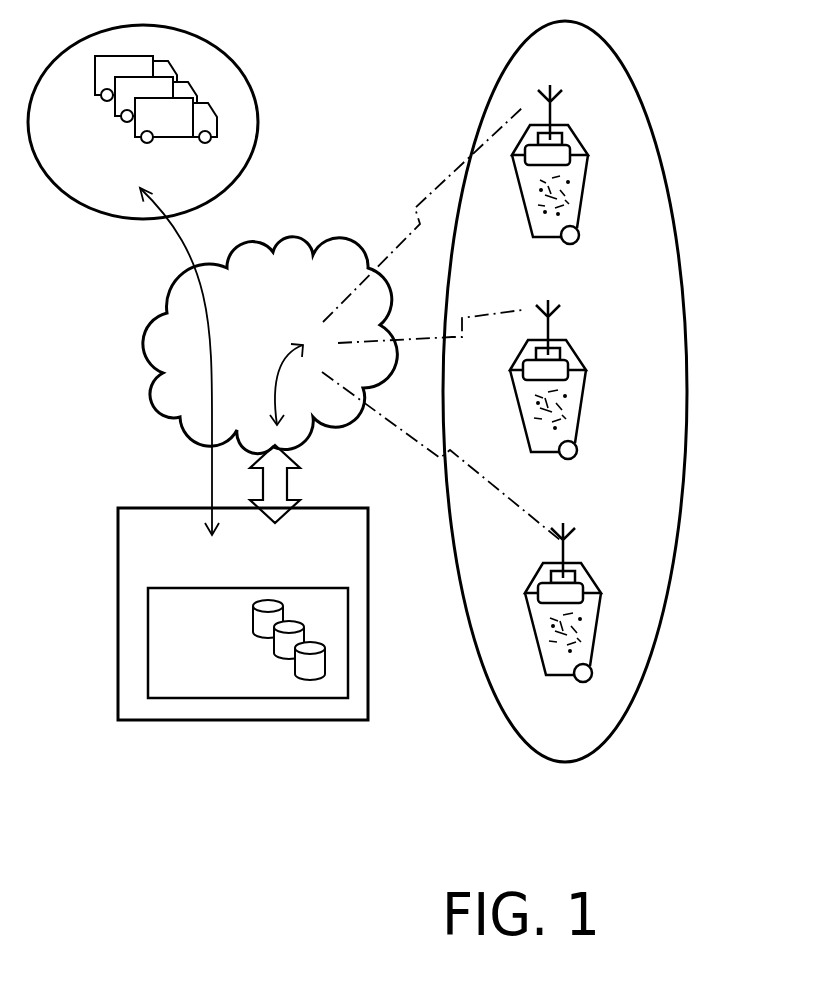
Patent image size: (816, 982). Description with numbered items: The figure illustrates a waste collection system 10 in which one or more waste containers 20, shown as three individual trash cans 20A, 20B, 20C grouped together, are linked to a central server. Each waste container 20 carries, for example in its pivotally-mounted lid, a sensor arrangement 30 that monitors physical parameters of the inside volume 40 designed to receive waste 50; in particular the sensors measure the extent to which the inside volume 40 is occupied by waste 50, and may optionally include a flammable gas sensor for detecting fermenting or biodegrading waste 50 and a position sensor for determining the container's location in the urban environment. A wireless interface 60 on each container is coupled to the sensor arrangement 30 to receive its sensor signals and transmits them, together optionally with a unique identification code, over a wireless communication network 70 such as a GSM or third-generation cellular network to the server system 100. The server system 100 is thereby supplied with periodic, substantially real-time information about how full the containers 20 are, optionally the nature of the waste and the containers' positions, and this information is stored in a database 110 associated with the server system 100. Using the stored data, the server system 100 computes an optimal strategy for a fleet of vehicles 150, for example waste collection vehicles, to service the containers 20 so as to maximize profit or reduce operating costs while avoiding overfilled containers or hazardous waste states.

The waste collection system 10 is at (331, 105).
The waste containers 20 is at (577, 724).
The first waste container 20A is at (575, 169).
The second waste container 20B is at (582, 403).
The third waste container 20C is at (598, 622).
The sensor arrangement 30 is at (535, 168).
The inside volume 40 is at (562, 175).
The waste 50 is at (578, 202).
The wireless interface 60 is at (558, 138).
The wireless communication network 70 is at (262, 321).
The server system 100 is at (178, 555).
The database 110 is at (227, 637).
The fleet of vehicles 150 is at (121, 166).